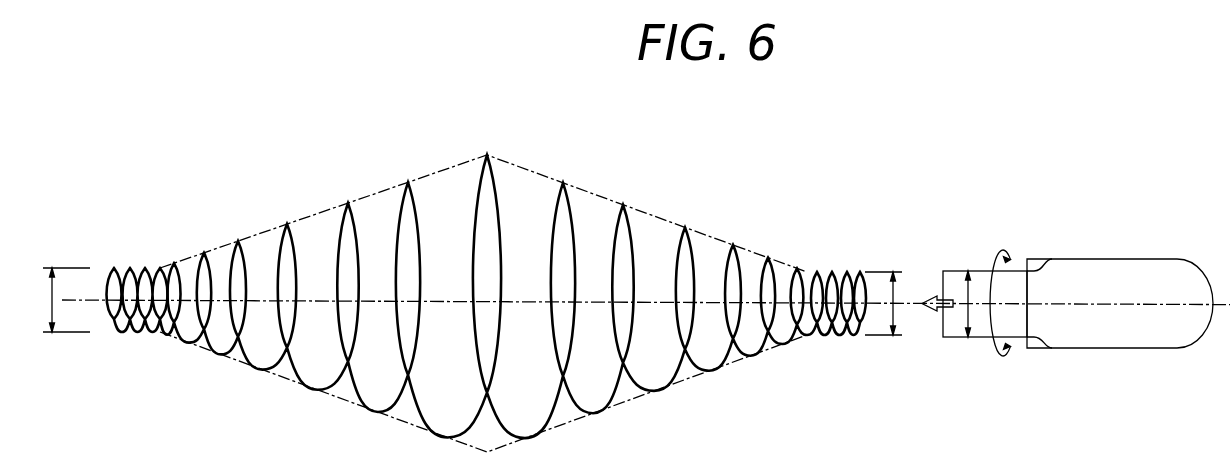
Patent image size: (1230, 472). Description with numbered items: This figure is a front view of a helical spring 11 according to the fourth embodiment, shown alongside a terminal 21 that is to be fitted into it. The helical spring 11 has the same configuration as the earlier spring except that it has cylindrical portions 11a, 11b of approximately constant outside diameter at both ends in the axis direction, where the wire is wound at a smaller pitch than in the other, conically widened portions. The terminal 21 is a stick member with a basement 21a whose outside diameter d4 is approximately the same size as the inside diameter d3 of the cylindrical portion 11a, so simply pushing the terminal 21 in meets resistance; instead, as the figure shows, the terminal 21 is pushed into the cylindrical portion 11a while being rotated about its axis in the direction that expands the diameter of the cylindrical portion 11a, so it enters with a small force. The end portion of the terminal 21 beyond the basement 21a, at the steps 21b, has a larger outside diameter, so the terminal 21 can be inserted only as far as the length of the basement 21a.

The helical spring 11 is at (484, 297).
The cylindrical portion 11a is at (860, 353).
The cylindrical portion 11b is at (163, 349).
The terminal 21 is at (1143, 332).
The basement 21a is at (1027, 372).
The step portion of mandrel 21b is at (1045, 263).
The inside diameter of the cylindrical portion d3 is at (893, 297).
The outside diameter of the basement d4 is at (968, 287).